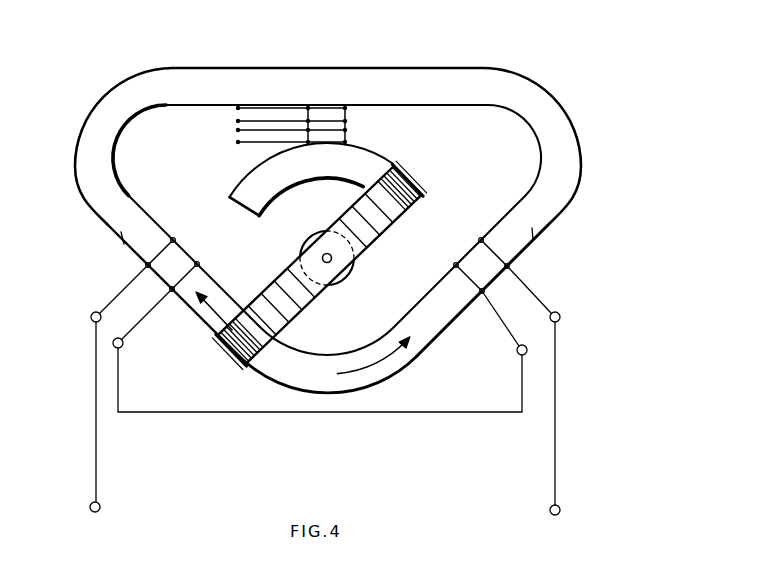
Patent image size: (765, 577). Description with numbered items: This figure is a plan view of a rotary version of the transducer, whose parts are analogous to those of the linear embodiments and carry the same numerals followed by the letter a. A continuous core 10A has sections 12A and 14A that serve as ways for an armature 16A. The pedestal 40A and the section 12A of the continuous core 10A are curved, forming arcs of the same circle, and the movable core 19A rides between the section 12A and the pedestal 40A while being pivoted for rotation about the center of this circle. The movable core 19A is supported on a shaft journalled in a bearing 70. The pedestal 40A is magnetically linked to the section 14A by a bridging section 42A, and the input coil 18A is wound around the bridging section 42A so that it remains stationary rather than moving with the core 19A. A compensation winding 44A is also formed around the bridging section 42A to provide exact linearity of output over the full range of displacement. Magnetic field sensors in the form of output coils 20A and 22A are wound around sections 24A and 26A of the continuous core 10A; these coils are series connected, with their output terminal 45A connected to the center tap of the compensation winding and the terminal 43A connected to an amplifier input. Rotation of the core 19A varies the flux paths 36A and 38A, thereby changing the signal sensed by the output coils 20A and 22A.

The continuous core 10A is at (298, 391).
The section of continuous core 12A is at (362, 376).
The section of continuous core 14A is at (413, 87).
The armature 16A is at (241, 179).
The input coil 18A is at (346, 109).
The movable core 19A is at (363, 233).
The output coil 20A is at (480, 237).
The output coil 22A is at (176, 242).
The section of core 24A is at (534, 240).
The section of core 26A is at (123, 241).
The flux path 36A is at (407, 368).
The flux path 38A is at (209, 318).
The pedestal 40A is at (372, 167).
The bridging section 42A is at (328, 110).
The terminal 43A is at (100, 507).
The compensation winding 44A is at (347, 141).
The output terminal 45A is at (560, 510).
The bearing 70 is at (343, 274).